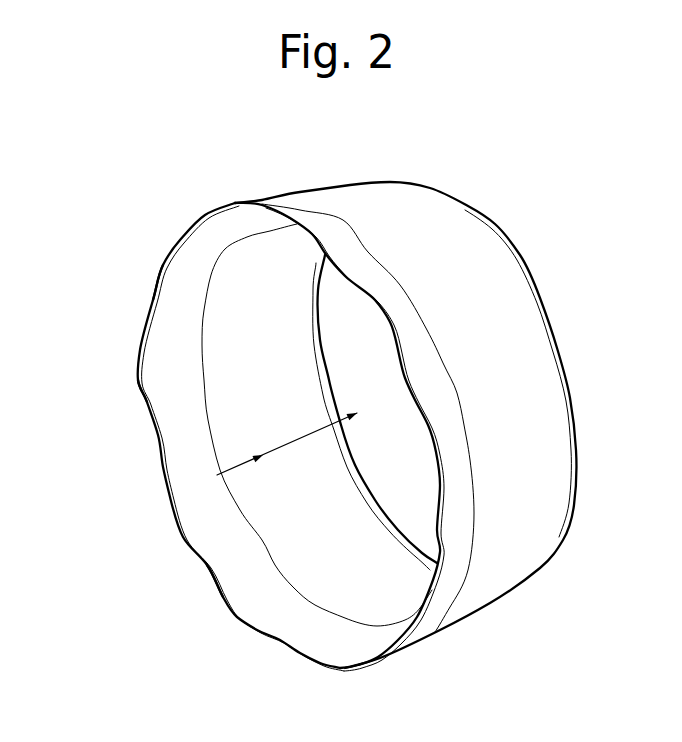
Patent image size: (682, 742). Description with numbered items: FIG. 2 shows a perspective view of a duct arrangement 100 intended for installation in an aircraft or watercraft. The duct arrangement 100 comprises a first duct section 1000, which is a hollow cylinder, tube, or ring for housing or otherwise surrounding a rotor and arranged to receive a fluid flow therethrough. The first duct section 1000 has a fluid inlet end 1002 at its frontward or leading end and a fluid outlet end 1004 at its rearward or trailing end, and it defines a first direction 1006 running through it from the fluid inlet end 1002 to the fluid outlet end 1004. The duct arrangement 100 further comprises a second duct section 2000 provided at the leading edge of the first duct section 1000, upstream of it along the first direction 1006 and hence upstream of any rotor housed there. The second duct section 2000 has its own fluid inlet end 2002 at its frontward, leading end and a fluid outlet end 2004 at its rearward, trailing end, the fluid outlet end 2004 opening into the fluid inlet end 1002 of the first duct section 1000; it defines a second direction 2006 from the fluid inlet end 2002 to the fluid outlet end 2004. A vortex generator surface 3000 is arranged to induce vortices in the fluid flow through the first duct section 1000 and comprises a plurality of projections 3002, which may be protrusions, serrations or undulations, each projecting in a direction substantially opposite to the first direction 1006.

The duct arrangement 100 is at (91, 204).
The first duct section 1000 is at (417, 200).
The fluid inlet end 1002 is at (293, 560).
The fluid outlet end 1004 is at (416, 451).
The first direction 1006 is at (318, 425).
The second duct section 2000 is at (200, 517).
The fluid inlet end 2002 is at (147, 408).
The fluid outlet end 2004 is at (173, 320).
The second direction 2006 is at (248, 465).
The vortex generator surface 3000 is at (323, 233).
The projections 3002 is at (355, 274).